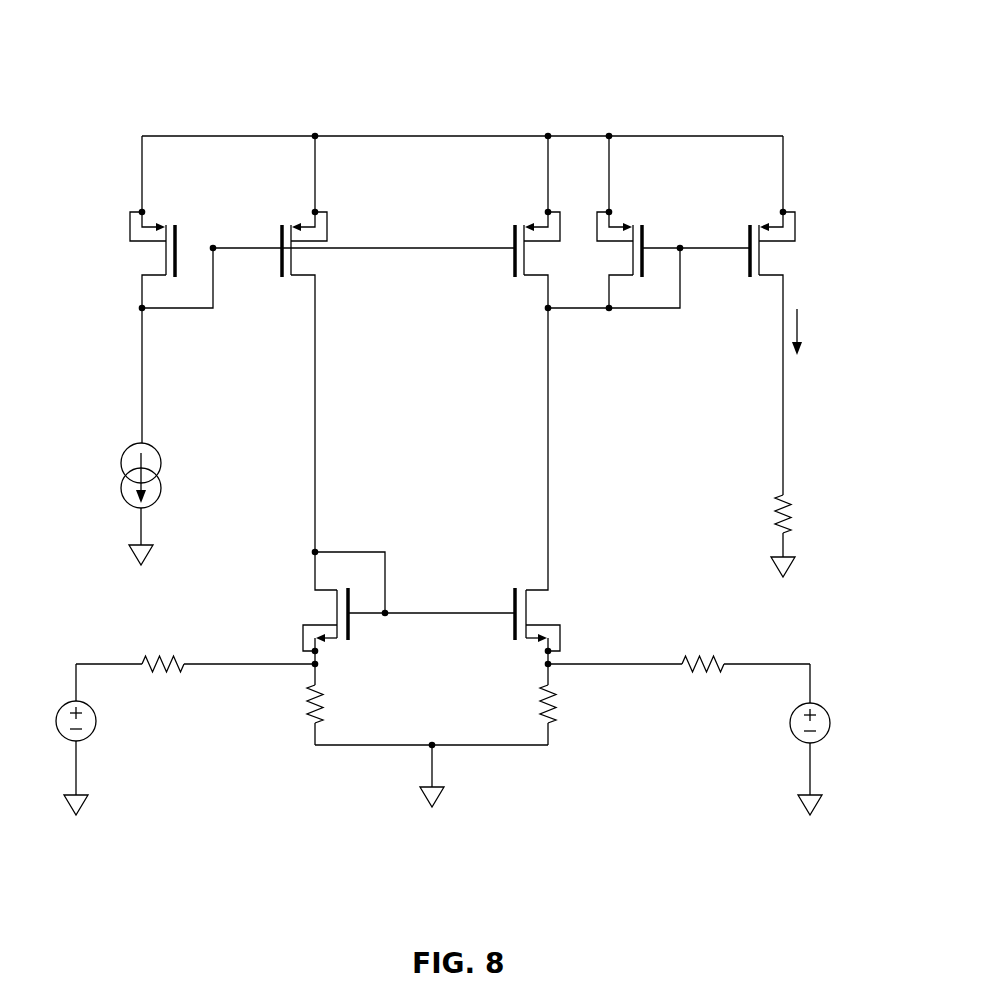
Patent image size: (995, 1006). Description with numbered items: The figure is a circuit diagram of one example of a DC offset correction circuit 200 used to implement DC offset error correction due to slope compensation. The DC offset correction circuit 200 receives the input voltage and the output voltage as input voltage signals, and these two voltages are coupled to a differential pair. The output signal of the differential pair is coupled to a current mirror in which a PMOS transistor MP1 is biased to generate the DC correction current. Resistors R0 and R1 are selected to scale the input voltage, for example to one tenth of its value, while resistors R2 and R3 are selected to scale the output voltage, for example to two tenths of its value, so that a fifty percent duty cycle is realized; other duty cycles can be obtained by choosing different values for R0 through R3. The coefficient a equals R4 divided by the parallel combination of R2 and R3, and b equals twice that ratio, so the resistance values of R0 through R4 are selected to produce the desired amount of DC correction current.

The DC offset correction circuit 200 is at (752, 53).
The PMOS transistor MP1 is at (786, 258).
The resistor R0 is at (303, 704).
The resistor R1 is at (163, 649).
The resistor R2 is at (561, 704).
The resistor R3 is at (703, 651).
The resistor R4 is at (796, 514).